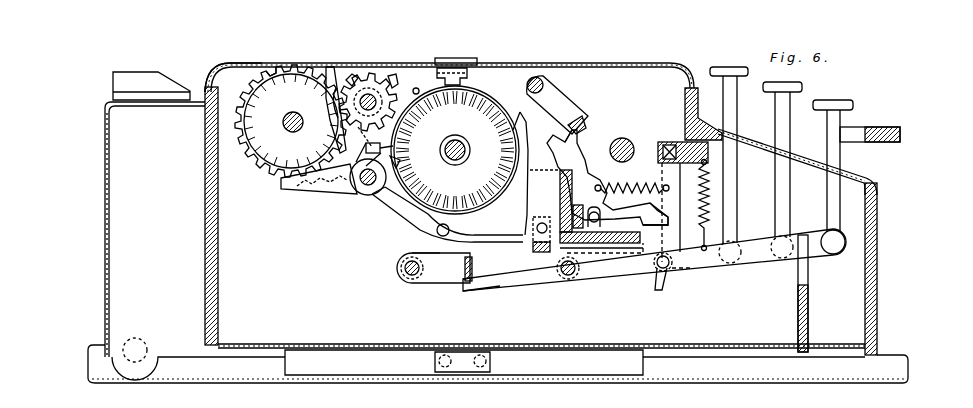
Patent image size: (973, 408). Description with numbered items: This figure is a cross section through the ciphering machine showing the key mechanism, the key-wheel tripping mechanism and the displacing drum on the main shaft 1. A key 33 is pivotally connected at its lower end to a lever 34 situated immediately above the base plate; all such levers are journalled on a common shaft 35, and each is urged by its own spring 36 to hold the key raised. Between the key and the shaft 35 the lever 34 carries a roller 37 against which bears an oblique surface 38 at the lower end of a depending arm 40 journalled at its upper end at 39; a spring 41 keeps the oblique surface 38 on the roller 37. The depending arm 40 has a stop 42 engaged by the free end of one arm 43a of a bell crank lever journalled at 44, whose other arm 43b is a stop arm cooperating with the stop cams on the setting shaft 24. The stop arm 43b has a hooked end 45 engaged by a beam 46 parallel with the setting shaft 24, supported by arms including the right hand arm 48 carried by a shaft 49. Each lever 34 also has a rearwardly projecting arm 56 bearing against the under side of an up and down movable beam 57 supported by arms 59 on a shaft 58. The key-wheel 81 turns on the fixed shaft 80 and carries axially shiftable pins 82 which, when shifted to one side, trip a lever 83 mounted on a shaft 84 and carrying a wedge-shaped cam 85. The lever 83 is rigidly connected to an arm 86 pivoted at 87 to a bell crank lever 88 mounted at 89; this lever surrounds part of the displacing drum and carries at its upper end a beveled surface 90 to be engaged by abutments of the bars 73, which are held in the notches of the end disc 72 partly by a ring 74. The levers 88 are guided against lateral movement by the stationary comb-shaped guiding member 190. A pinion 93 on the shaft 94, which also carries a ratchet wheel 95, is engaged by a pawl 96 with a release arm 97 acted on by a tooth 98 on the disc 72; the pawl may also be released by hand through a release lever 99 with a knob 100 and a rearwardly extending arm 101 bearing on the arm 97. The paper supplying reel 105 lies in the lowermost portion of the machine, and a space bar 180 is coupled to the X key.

The main shaft 1 is at (468, 156).
The setting shaft 24 is at (630, 142).
The key 33 is at (728, 68).
The lever 34 is at (712, 262).
The shaft 35 is at (569, 278).
The spring 36 is at (712, 189).
The roller 37 is at (663, 270).
The oblique surface 38 is at (677, 272).
The journal of depending arm 39 is at (670, 148).
The depending arm 40 is at (673, 172).
The spring 41 is at (670, 205).
The stop 42 is at (670, 220).
The arm of bell crank lever 43a is at (657, 217).
The stop arm 43b is at (583, 160).
The journal of bell crank lever 44 is at (594, 228).
The hooked end 45 is at (585, 127).
The beam 46 is at (578, 122).
The supporting arm 48 is at (556, 95).
The shaft 49 is at (535, 78).
The rearwardly projecting arm 56 is at (495, 283).
The beam 57 is at (470, 272).
The shaft 58 is at (425, 250).
The arm 59 is at (425, 275).
The end disc 72 is at (478, 104).
The bar 73 is at (438, 108).
The ring 74 is at (420, 203).
The fixed shaft 80 is at (292, 130).
The key-wheel 81 is at (262, 68).
The pin 82 is at (271, 63).
The lever 83 is at (327, 190).
The shaft 84 is at (365, 186).
The wedge-shaped cam 85 is at (294, 184).
The arm 86 is at (392, 213).
The pivot 87 is at (437, 232).
The bell crank lever 88 is at (505, 235).
The mounting of bell crank lever 89 is at (542, 235).
The beveled surface 90 is at (513, 131).
The pinion 93 is at (394, 78).
The shaft 94 is at (370, 96).
The ratchet wheel 95 is at (351, 82).
The pawl 96 is at (315, 90).
The release arm 97 is at (392, 135).
The tooth 98 is at (417, 90).
The release lever 99 is at (434, 78).
The knob 100 is at (462, 63).
The rearwardly extending arm 101 is at (398, 162).
The paper supplying reel 105 is at (323, 360).
The bar 180 is at (900, 134).
The comb-shaped guiding member 190 is at (537, 222).